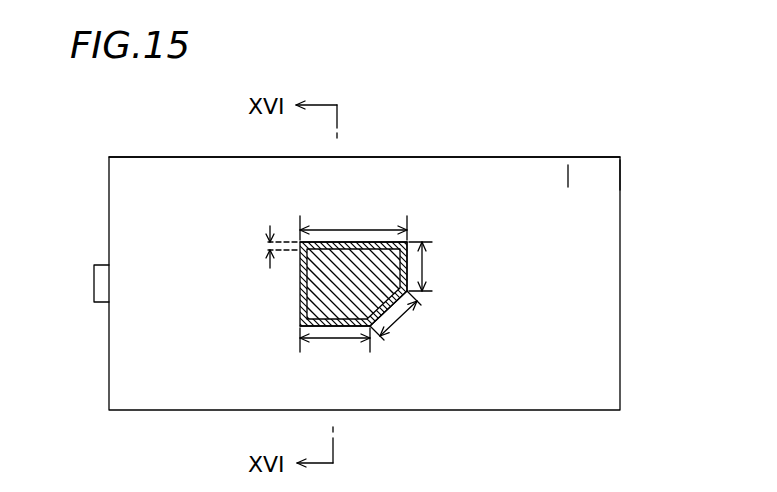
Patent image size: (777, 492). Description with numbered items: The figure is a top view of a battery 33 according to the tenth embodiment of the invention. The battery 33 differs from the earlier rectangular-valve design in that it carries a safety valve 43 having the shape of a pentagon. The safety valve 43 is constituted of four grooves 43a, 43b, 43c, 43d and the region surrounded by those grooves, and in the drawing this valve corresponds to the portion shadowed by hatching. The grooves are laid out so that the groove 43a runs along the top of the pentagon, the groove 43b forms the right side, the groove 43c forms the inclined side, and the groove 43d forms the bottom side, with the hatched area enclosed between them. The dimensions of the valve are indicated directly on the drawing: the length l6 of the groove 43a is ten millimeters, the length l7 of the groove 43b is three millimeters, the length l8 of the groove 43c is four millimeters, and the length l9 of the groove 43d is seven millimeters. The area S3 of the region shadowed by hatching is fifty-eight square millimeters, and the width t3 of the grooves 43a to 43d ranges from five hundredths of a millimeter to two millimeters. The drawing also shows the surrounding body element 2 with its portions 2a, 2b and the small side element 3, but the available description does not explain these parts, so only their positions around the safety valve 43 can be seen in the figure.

The laminated plate 2 is at (640, 101).
The first plate layer 2a is at (568, 187).
The second plate layer 2b is at (620, 183).
The projection 3 is at (100, 270).
The battery 33 is at (425, 122).
The safety valve 43 is at (427, 228).
The groove 43a is at (300, 242).
The groove 43b is at (412, 296).
The groove 43c is at (386, 322).
The groove 43d is at (348, 328).
The area S3 is at (312, 285).
The width t3 is at (269, 247).
The length l6 is at (353, 222).
The length l7 is at (429, 266).
The length l8 is at (396, 321).
The length l9 is at (335, 348).